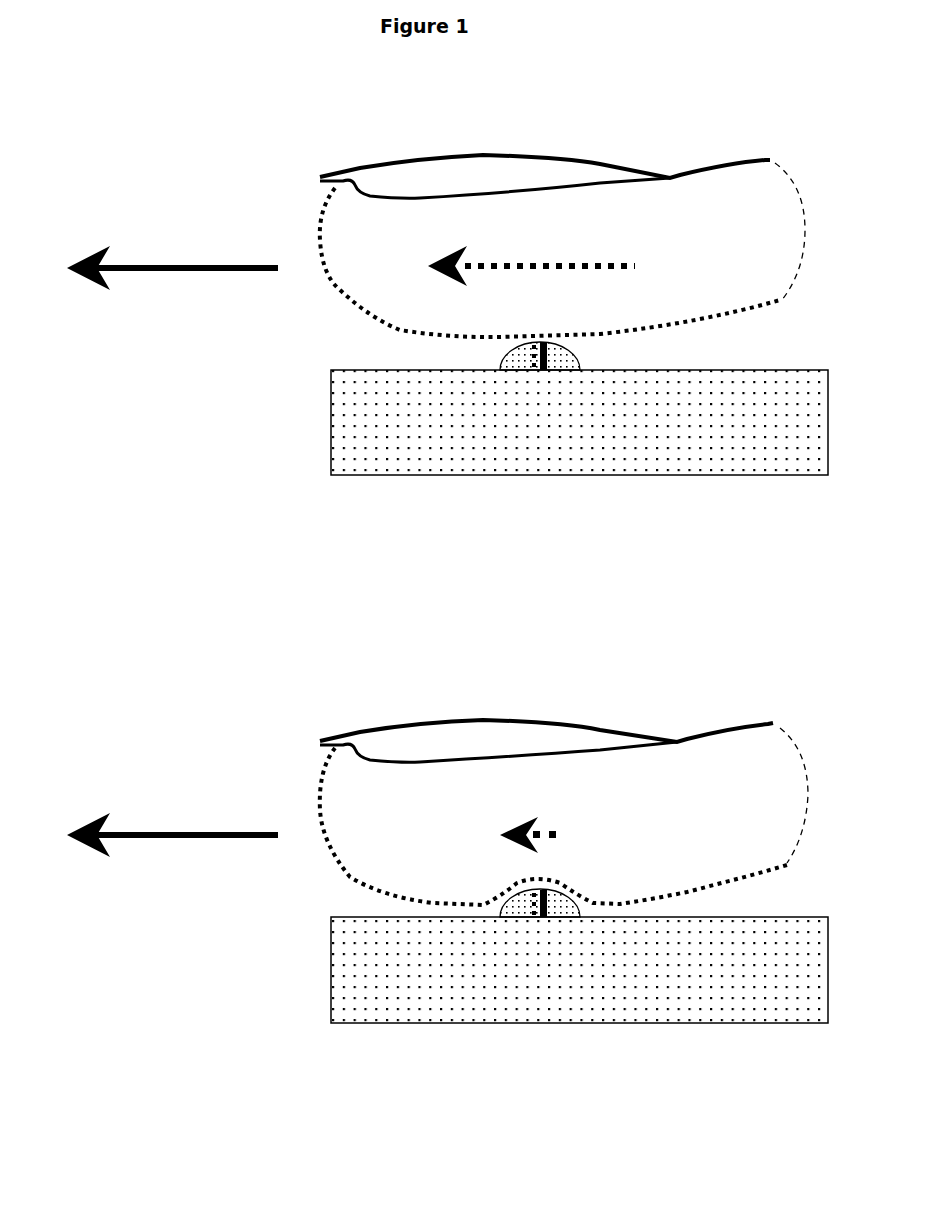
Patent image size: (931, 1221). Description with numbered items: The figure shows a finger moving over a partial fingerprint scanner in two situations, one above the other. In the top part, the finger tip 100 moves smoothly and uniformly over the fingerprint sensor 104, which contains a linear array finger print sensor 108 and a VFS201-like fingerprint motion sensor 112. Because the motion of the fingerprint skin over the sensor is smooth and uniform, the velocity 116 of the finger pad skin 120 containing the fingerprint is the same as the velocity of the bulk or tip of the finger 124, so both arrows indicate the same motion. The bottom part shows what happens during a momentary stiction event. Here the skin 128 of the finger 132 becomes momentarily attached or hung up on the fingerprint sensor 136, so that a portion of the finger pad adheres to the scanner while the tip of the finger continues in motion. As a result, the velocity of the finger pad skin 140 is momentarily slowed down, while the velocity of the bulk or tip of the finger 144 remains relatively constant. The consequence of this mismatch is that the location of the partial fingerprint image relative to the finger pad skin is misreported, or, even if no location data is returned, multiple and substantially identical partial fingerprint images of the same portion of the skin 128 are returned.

The finger tip 100 is at (569, 256).
The fingerprint sensor 104 is at (587, 357).
The linear array finger print sensor 108 is at (538, 393).
The fingerprint motion sensor 112 is at (525, 357).
The velocity of the finger pad skin 116 is at (531, 264).
The finger pad skin 120 is at (613, 340).
The velocity of the bulk or tip of the finger 124 is at (172, 265).
The skin 128 is at (663, 898).
The finger 132 is at (569, 816).
The fingerprint sensor 136 is at (560, 920).
The velocity of the finger pad skin 140 is at (544, 833).
The velocity of the bulk or tip of the finger 144 is at (172, 834).